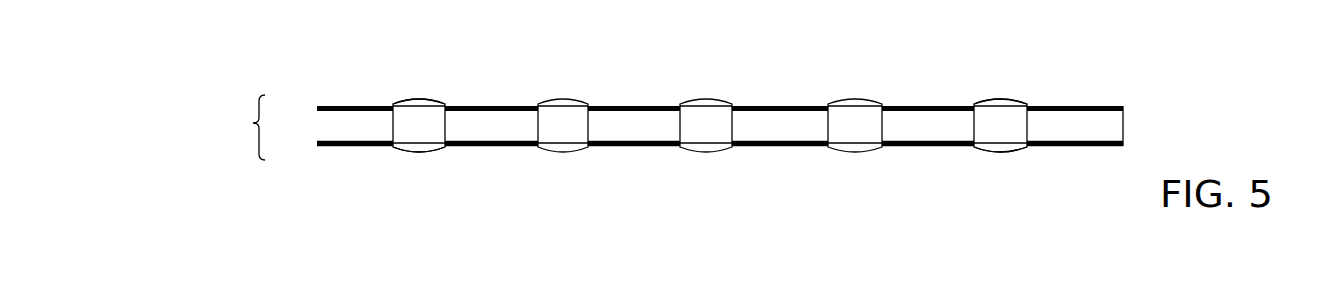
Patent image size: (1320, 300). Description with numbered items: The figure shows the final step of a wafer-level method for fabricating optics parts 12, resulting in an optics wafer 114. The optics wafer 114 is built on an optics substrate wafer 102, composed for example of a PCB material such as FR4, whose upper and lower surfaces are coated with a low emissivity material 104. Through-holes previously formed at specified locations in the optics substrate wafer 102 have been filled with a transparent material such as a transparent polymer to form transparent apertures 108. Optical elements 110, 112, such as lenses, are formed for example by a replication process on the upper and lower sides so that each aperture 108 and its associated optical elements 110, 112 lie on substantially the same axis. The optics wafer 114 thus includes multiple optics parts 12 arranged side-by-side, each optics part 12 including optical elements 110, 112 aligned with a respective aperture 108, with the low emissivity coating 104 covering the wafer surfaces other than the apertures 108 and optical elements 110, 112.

The optics part 12 is at (483, 192).
The optics substrate wafer 102 is at (322, 127).
The low emissivity material 104 is at (355, 104).
The transparent aperture 108 is at (407, 120).
The optical element 110 is at (431, 99).
The optical element 112 is at (427, 156).
The optics wafer 114 is at (670, 127).